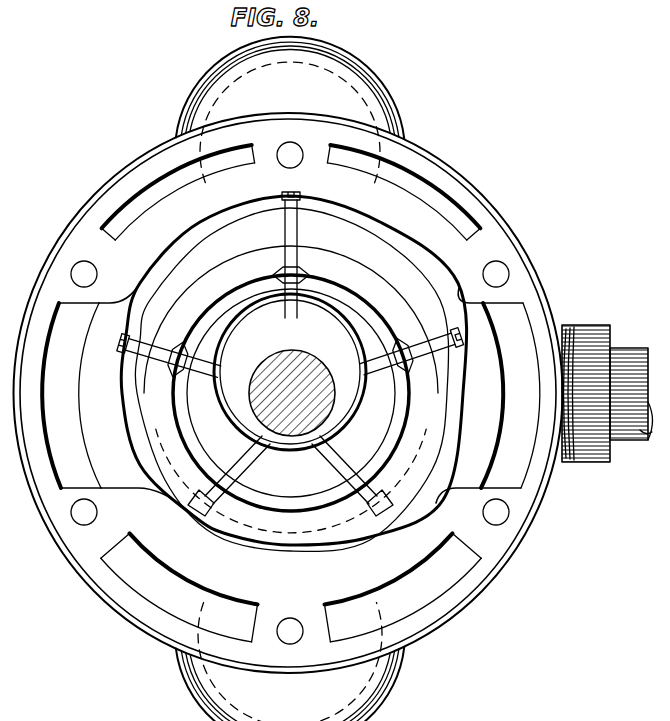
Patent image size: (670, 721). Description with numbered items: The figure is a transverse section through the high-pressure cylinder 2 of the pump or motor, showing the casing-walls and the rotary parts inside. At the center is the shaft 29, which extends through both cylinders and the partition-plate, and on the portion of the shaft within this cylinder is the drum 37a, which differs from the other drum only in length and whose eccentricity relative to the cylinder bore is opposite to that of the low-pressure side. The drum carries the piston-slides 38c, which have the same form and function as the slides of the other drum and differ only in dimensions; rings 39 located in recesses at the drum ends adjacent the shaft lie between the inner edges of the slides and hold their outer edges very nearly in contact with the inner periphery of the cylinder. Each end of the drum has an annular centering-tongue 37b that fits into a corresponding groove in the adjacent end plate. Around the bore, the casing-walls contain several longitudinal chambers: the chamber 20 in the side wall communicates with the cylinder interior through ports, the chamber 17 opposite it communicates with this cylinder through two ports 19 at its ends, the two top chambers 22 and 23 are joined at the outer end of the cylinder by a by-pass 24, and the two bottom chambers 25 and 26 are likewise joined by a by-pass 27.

The high-pressure cylinder 2 is at (288, 393).
The by-pass 24 is at (290, 110).
The by-pass 27 is at (290, 662).
The chamber 22 is at (208, 158).
The chamber 23 is at (359, 158).
The chamber 26 is at (179, 587).
The chamber 25 is at (403, 587).
The chamber 17 is at (71, 395).
The ports 19 is at (102, 316).
The chamber 20 is at (488, 395).
The drum 37a is at (290, 351).
The annular centering-tongue 37b is at (322, 468).
The piston-slides 38c is at (290, 510).
The rings 39 is at (352, 318).
The shaft 29 is at (292, 393).